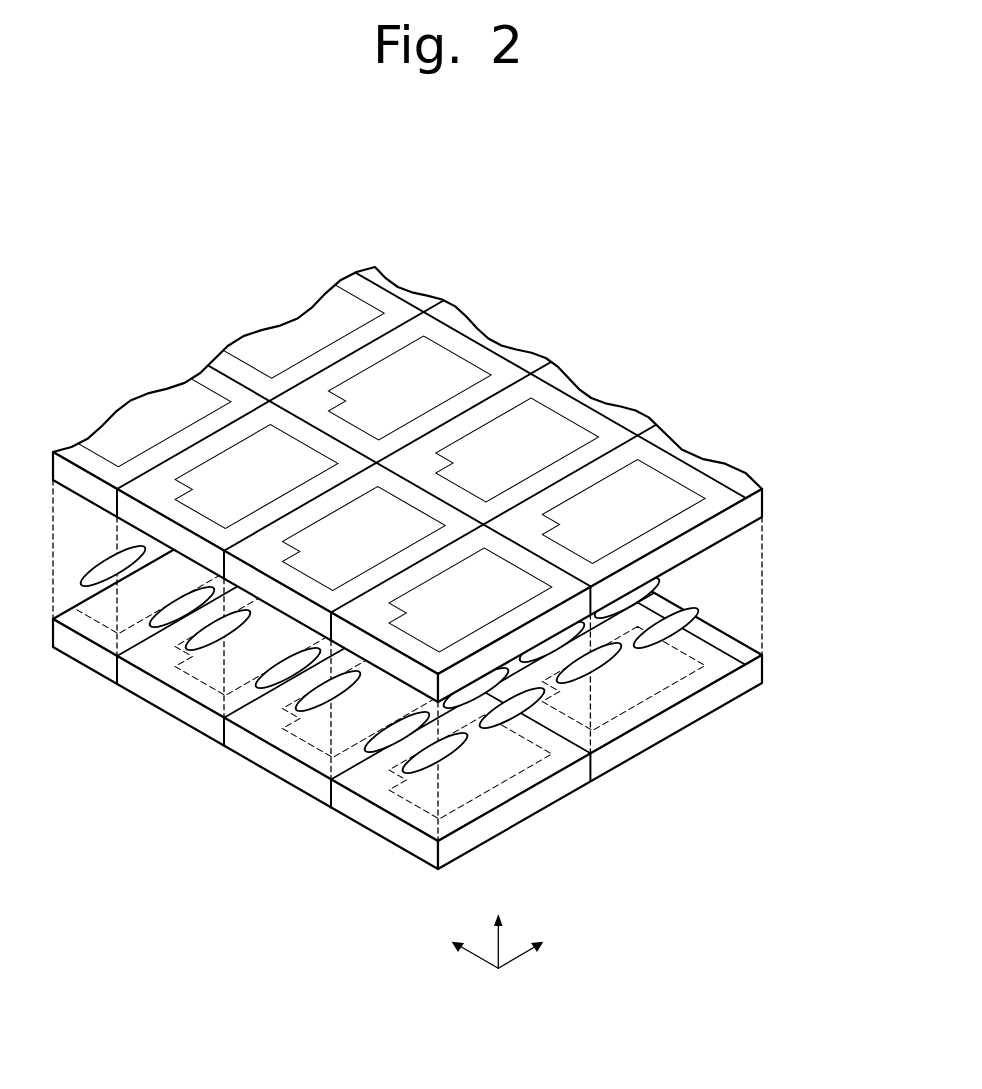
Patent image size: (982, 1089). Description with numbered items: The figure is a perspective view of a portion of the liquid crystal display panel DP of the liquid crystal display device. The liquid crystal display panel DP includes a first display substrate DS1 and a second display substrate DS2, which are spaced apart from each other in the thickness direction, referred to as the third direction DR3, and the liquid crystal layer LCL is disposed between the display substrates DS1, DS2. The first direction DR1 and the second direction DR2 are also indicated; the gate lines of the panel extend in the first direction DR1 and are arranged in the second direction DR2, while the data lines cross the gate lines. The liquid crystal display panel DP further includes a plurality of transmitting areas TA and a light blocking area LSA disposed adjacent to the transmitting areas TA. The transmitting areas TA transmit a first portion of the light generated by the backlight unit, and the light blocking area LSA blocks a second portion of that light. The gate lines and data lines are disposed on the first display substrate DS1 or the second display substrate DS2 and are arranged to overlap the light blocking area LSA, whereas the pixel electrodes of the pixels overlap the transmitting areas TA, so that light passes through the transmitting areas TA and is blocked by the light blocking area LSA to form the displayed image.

The liquid crystal display panel DP is at (425, 545).
The first display substrate DS1 is at (765, 666).
The second display substrate DS2 is at (425, 462).
The liquid crystal layer LCL is at (774, 518).
The transmitting area TA is at (675, 476).
The light blocking area LSA is at (722, 494).
The first direction DR1 is at (462, 942).
The second direction DR2 is at (532, 942).
The third direction DR3 is at (498, 930).